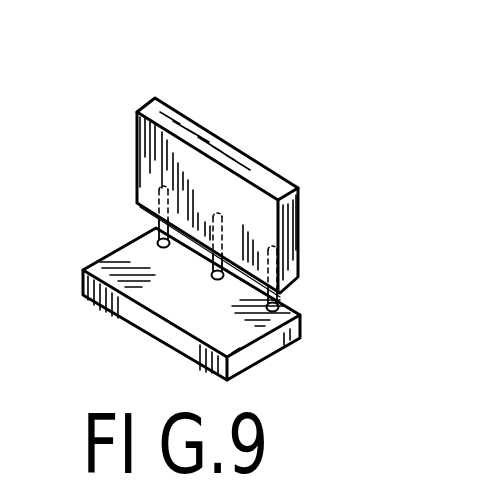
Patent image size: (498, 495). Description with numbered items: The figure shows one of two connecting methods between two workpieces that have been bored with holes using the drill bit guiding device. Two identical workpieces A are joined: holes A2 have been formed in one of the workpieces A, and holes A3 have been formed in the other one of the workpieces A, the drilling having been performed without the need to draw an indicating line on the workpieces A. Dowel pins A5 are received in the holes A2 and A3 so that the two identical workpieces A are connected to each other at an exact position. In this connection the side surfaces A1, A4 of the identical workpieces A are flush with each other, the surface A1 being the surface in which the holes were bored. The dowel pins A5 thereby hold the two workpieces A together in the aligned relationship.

The workpiece A is at (130, 240).
The surface A1 is at (303, 327).
The hole A2 is at (228, 233).
The hole A3 is at (280, 320).
The side surface A4 is at (300, 217).
The dowel pin A5 is at (290, 293).